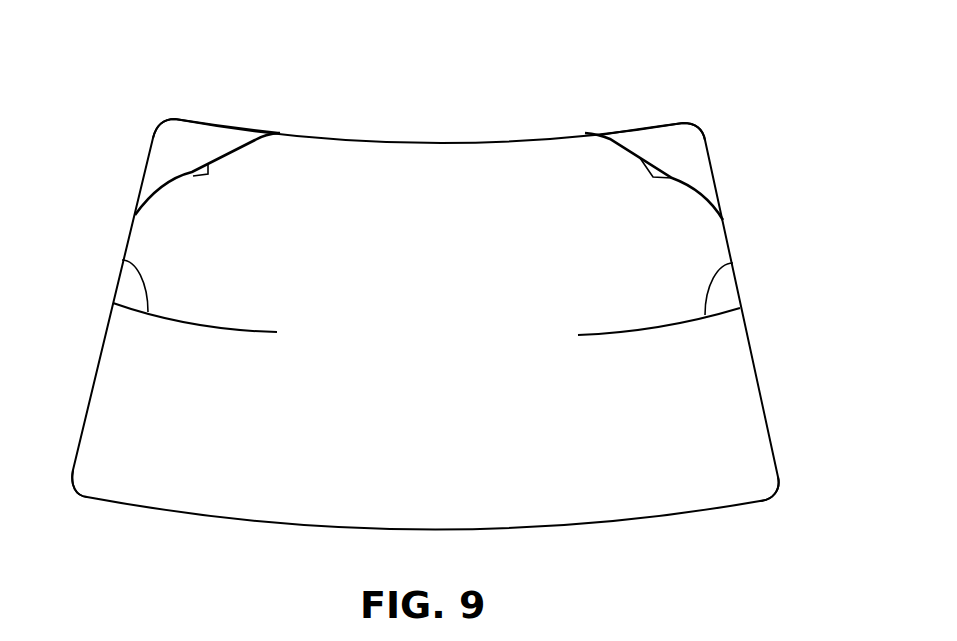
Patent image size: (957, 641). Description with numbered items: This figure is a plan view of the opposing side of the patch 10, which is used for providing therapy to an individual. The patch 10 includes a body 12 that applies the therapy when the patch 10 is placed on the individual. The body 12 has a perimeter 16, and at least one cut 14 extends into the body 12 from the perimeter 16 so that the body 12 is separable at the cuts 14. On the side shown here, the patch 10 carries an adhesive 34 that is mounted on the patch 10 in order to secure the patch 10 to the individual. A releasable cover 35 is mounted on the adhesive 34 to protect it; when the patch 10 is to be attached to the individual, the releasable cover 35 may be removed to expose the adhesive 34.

The patch 10 is at (683, 70).
The body 12 is at (720, 392).
The cut 14 is at (122, 260).
The perimeter 16 is at (72, 463).
The adhesive 34 is at (160, 157).
The releasable cover 35 is at (212, 167).